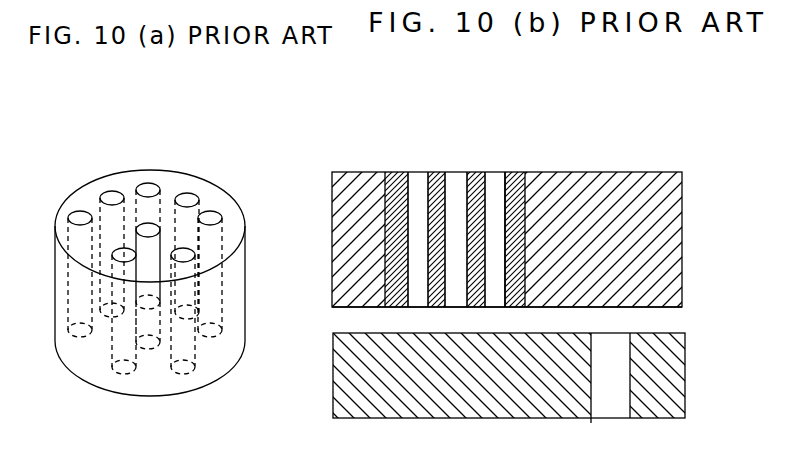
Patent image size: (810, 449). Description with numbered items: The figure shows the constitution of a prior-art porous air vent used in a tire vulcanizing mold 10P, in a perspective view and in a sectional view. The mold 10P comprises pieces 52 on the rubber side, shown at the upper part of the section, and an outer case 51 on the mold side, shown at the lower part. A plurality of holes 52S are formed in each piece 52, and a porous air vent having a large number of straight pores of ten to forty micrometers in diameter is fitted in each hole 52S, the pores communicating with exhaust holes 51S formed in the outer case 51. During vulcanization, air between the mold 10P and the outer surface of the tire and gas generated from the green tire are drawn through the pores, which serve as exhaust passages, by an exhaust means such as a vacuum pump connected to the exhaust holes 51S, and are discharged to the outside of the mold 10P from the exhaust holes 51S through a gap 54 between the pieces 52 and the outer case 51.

The mold 10P is at (598, 157).
The outer case 51 is at (663, 347).
The exhaust hole 51S is at (612, 345).
The piece 52 is at (618, 173).
The hole 52S is at (510, 233).
The gap 54 is at (361, 323).